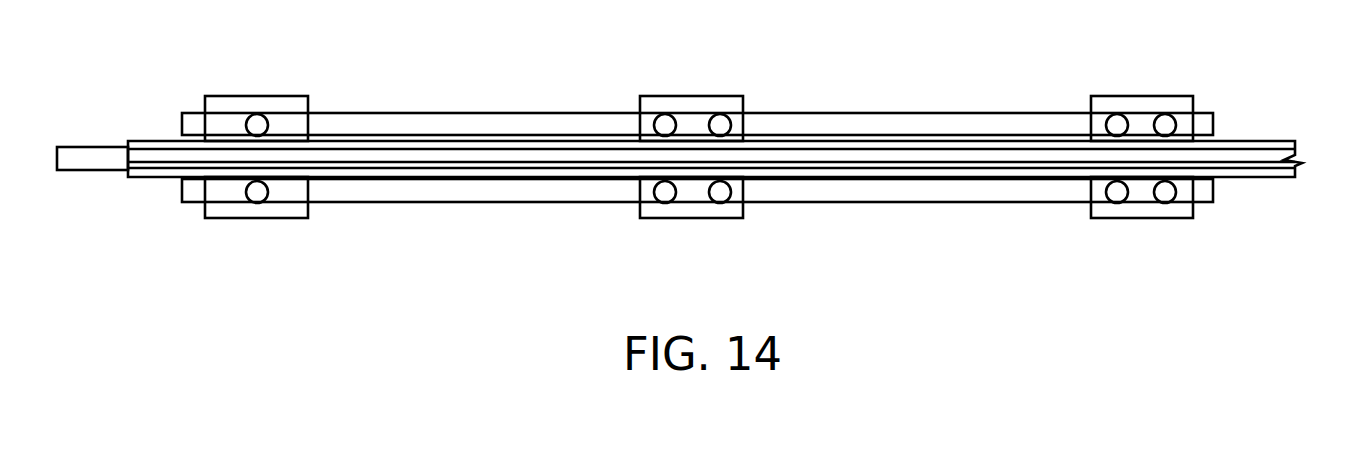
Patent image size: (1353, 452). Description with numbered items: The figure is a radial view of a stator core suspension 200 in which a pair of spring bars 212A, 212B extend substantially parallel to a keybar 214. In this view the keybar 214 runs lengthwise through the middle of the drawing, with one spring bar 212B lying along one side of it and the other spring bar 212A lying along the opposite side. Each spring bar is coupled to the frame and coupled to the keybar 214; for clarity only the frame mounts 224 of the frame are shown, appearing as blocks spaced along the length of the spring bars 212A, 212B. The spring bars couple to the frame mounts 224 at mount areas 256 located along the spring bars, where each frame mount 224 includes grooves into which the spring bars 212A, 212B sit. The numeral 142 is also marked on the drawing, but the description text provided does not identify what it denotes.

The stator core suspension 200 is at (663, 166).
The keybar 214 is at (1252, 163).
The spring bar 212A is at (883, 190).
The spring bar 212B is at (878, 127).
The frame mount 224 is at (283, 105).
The mount area 256 is at (1107, 92).
The fastener 142 is at (708, 228).